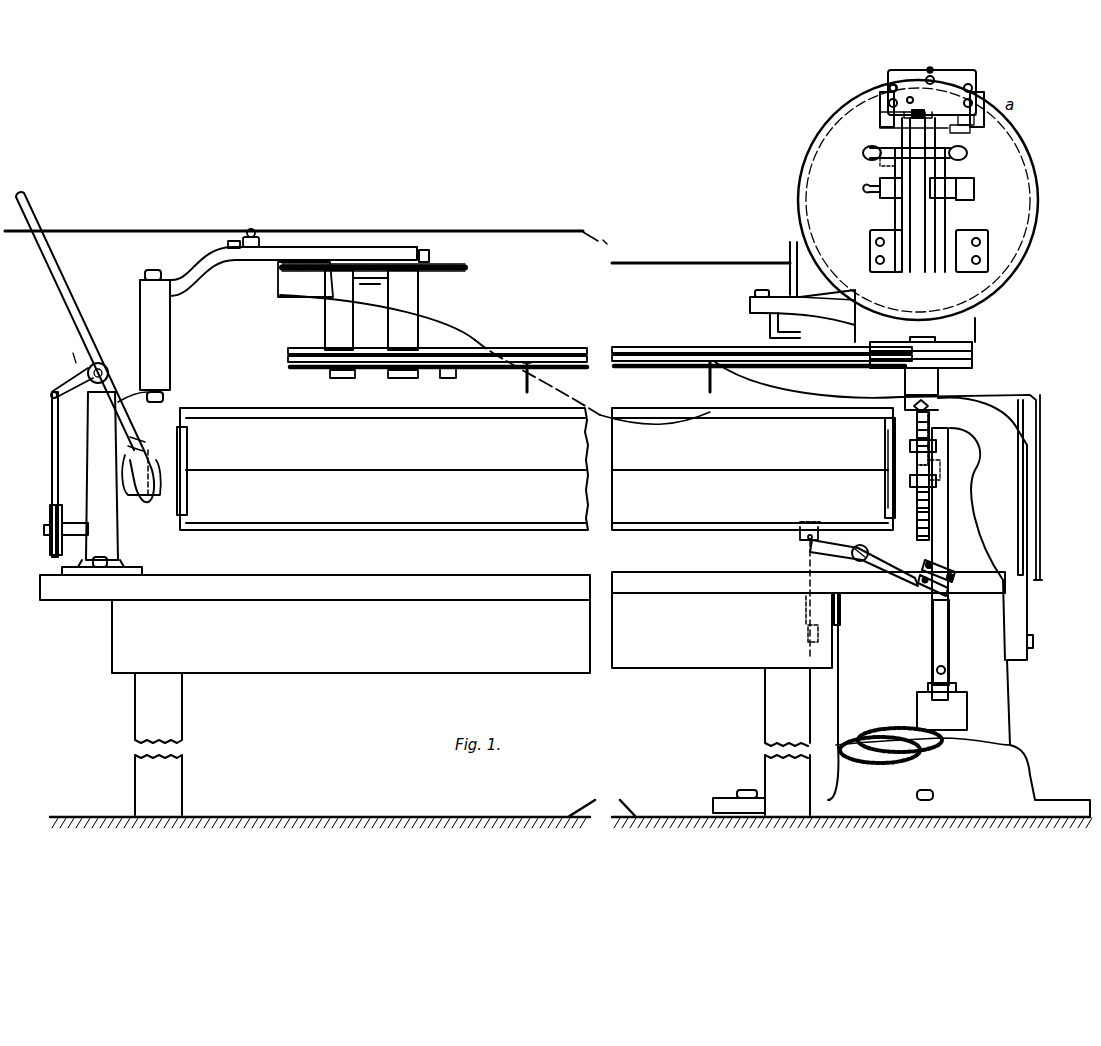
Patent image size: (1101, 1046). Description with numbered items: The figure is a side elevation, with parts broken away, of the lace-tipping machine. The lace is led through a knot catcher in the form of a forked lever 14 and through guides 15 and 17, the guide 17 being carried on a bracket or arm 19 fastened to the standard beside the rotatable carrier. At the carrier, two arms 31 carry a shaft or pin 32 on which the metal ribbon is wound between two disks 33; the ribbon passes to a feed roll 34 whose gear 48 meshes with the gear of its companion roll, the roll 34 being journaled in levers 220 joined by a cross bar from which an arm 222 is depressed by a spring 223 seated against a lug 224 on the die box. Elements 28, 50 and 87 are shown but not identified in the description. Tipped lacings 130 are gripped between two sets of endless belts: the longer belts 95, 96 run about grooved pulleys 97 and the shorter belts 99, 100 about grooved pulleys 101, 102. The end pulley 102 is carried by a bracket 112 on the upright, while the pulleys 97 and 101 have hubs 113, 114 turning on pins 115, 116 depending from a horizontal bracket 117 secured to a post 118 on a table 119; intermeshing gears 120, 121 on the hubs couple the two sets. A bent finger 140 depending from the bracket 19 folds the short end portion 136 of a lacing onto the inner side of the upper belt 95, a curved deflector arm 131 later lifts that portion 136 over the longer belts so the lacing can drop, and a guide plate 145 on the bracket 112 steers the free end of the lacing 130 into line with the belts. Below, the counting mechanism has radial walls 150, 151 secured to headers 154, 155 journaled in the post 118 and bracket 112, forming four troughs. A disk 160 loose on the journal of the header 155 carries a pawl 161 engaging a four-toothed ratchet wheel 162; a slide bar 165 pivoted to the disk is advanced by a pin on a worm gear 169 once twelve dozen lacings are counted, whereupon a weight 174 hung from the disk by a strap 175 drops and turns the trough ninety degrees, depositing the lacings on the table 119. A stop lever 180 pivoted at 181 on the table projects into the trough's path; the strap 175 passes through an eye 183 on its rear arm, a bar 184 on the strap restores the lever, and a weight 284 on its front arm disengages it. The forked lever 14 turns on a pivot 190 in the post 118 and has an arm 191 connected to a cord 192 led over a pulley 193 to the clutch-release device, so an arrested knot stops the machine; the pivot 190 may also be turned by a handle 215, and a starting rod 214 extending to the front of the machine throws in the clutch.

The forked lever 14 is at (60, 298).
The guide 15 is at (255, 233).
The guide 17 is at (788, 262).
The bracket or arm 19 is at (808, 300).
The disc head 28 is at (1035, 256).
The arms 31 is at (950, 222).
The shaft or pin 32 is at (975, 190).
The disks 33 is at (950, 182).
The feed roll 34 is at (870, 150).
The gear 48 is at (972, 134).
The top block 50 is at (952, 82).
The screw 87 is at (921, 60).
The belt 95 is at (288, 350).
The belt 96 is at (288, 361).
The grooved pulley 97 is at (306, 372).
The belt 99 is at (548, 350).
The belt 100 is at (648, 366).
The grooved pulley 101 is at (456, 380).
The grooved pulley 102 is at (938, 342).
The bracket 112 is at (998, 565).
The hub 113 is at (324, 318).
The hub 114 is at (420, 300).
The shaft or pin 115 is at (342, 380).
The shaft or pin 116 is at (405, 380).
The horizontally extended bracket 117 is at (262, 262).
The upright or post 118 is at (85, 421).
The table 119 is at (255, 580).
The gear 120 is at (318, 270).
The gear 121 is at (458, 270).
The tipped lacing 130 is at (1042, 490).
The downwardly curved finger or arm 131 is at (395, 312).
The short end portion 136 is at (523, 380).
The bent finger or arm 140 is at (784, 340).
The guide plate 145 is at (1024, 383).
The radially disposed wall 150 is at (690, 404).
The radially disposed wall 151 is at (705, 528).
The header 154 is at (188, 452).
The header 155 is at (886, 486).
The disk or wheel 160 is at (949, 514).
The pawl 161 is at (917, 455).
The ratchet wheel 162 is at (915, 482).
The bar 165 is at (932, 420).
The worm gear 169 is at (925, 545).
The weight 174 is at (960, 690).
The strap 175 is at (949, 636).
The stop lever 180 is at (810, 540).
The pivot 181 is at (868, 548).
The eye or guide 183 is at (926, 588).
The bar or device 184 is at (945, 568).
The pivot 190 is at (108, 373).
The arm 191 is at (110, 358).
The cord, chain or flexible device 192 is at (52, 445).
The pulley 193 is at (48, 515).
The starting rod 214 is at (840, 615).
The handle 215 is at (150, 500).
The arms or levers 220 is at (960, 108).
The arm 222 is at (978, 125).
The spring 223 is at (880, 112).
The lug 224 is at (890, 88).
The weight 284 is at (808, 635).